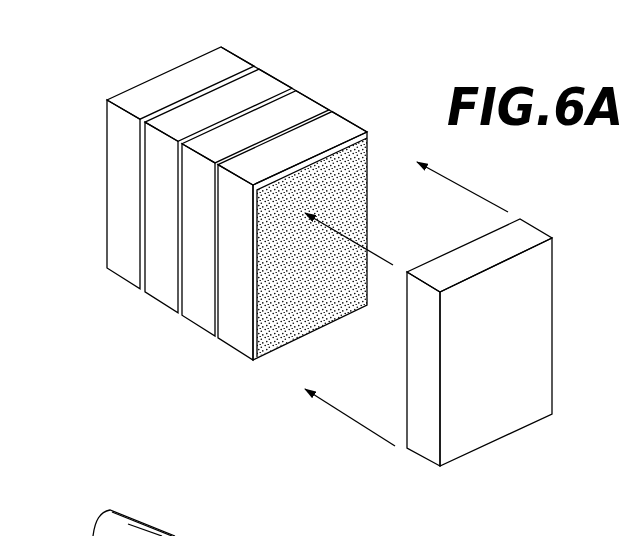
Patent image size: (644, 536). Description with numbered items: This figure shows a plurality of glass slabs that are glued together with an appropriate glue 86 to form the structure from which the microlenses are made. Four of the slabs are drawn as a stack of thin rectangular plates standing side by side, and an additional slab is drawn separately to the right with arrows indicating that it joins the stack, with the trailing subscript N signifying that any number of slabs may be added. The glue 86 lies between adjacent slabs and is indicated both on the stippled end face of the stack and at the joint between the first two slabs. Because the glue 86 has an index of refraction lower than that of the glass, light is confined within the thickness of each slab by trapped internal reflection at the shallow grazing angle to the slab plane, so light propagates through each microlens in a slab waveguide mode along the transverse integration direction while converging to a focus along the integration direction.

The glue 86 is at (140, 181).